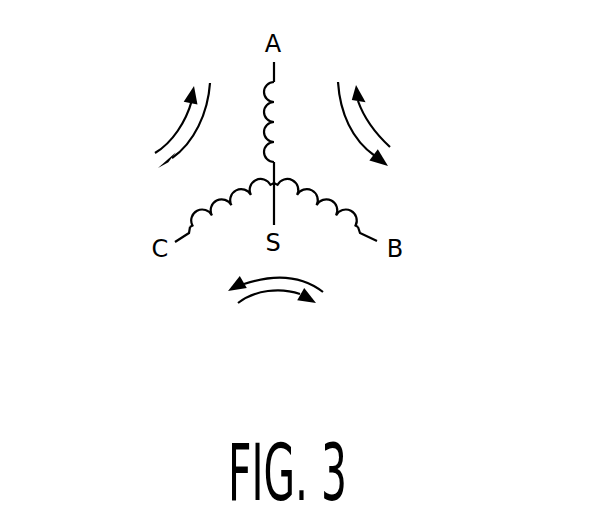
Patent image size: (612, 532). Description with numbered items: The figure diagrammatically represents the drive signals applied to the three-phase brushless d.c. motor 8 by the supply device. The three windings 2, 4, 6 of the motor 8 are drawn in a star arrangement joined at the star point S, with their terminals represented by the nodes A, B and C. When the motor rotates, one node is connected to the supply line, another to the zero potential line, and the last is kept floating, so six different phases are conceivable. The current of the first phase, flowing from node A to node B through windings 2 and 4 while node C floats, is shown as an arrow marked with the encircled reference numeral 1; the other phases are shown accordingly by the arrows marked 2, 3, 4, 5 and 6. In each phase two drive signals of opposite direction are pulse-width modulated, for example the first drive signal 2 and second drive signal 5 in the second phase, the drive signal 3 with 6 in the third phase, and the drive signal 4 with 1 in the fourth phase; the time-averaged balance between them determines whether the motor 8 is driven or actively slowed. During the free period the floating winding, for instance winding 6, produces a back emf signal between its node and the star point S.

The drive signal 1 is at (362, 140).
The winding / drive signal 2 is at (262, 117).
The drive signal 3 is at (267, 275).
The winding / drive signal 4 is at (343, 203).
The drive signal 5 is at (187, 117).
The winding / drive signal 6 is at (207, 203).
The three-phase brushless d.c. motor 8 is at (452, 308).